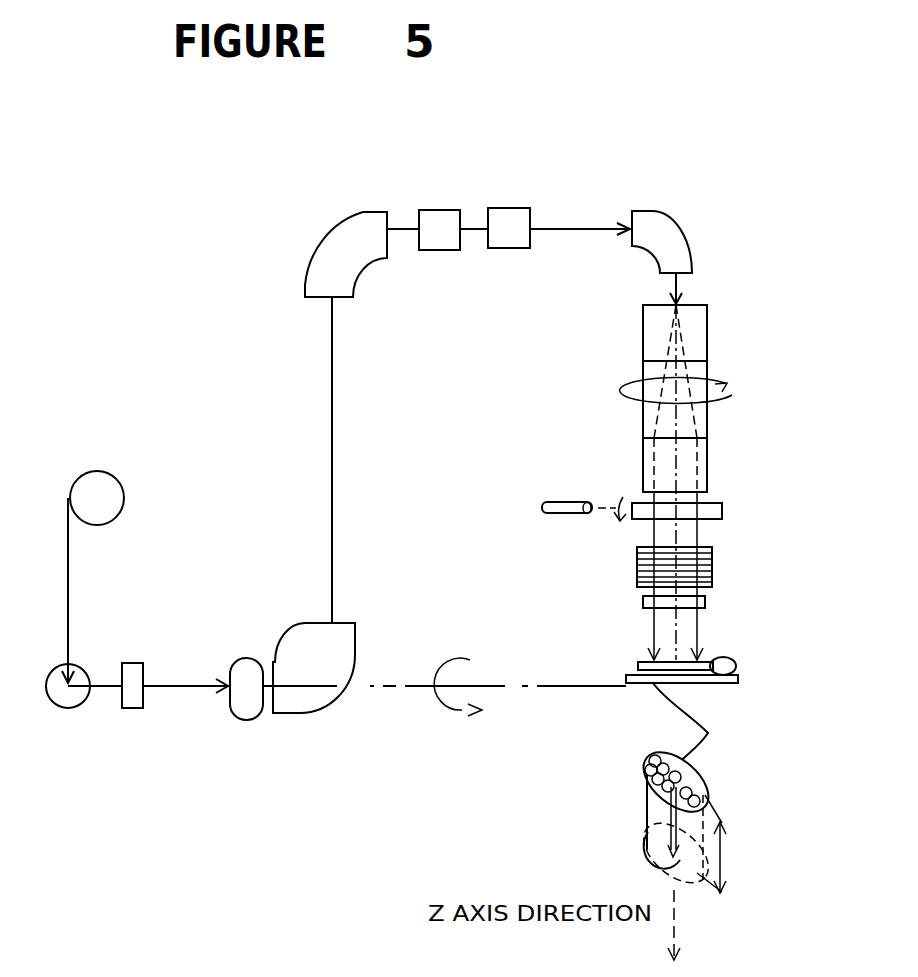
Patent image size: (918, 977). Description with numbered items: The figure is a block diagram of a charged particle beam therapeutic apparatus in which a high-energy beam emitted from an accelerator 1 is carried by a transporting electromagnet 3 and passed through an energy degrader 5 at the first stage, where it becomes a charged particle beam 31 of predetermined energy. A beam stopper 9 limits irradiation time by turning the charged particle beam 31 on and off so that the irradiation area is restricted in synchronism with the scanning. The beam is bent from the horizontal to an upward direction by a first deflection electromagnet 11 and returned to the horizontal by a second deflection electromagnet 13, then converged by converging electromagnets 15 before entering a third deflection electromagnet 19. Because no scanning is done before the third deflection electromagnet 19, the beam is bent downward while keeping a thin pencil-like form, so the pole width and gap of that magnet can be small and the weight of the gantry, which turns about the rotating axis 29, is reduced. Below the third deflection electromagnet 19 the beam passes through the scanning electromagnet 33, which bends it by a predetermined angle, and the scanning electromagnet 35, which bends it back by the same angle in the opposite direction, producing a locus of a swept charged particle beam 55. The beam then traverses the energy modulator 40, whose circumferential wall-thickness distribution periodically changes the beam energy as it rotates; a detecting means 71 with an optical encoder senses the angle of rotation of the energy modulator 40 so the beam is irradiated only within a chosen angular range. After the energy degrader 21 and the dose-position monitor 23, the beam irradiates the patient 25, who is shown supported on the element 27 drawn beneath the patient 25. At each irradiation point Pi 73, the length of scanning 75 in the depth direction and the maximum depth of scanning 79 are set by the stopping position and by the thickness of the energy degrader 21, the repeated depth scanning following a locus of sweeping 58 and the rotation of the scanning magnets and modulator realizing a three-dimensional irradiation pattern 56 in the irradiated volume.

The accelerator 1 is at (112, 473).
The transporting electromagnet 3 is at (69, 708).
The energy degrader at the first stage 5 is at (135, 663).
The charged particle beam 31 is at (163, 688).
The beam stopper 9 is at (245, 720).
The first deflection electromagnet 11 is at (353, 648).
The second deflection electromagnet 13 is at (312, 255).
The converging electromagnets 15 is at (498, 208).
The third deflection electromagnet 19 is at (690, 245).
The scanning electromagnet 33 is at (643, 335).
The scanning electromagnet 35 is at (643, 470).
The energy modulator 40 is at (722, 511).
The detecting means 71 is at (635, 522).
The energy degrader 21 is at (712, 552).
The dose-position monitor 23 is at (705, 600).
The patient 25 is at (728, 659).
The work table 27 is at (717, 683).
The rotating axis 29 is at (508, 684).
The irradiation point Pi 73 is at (708, 733).
The locus of a swept charged particle beam 55 is at (690, 788).
The three-dimensional irradiation pattern 56 is at (645, 767).
The locus of sweeping 58 is at (660, 813).
The maximum depth zi of scanning 79 is at (660, 868).
The length of scanning Δzi 75 is at (720, 862).